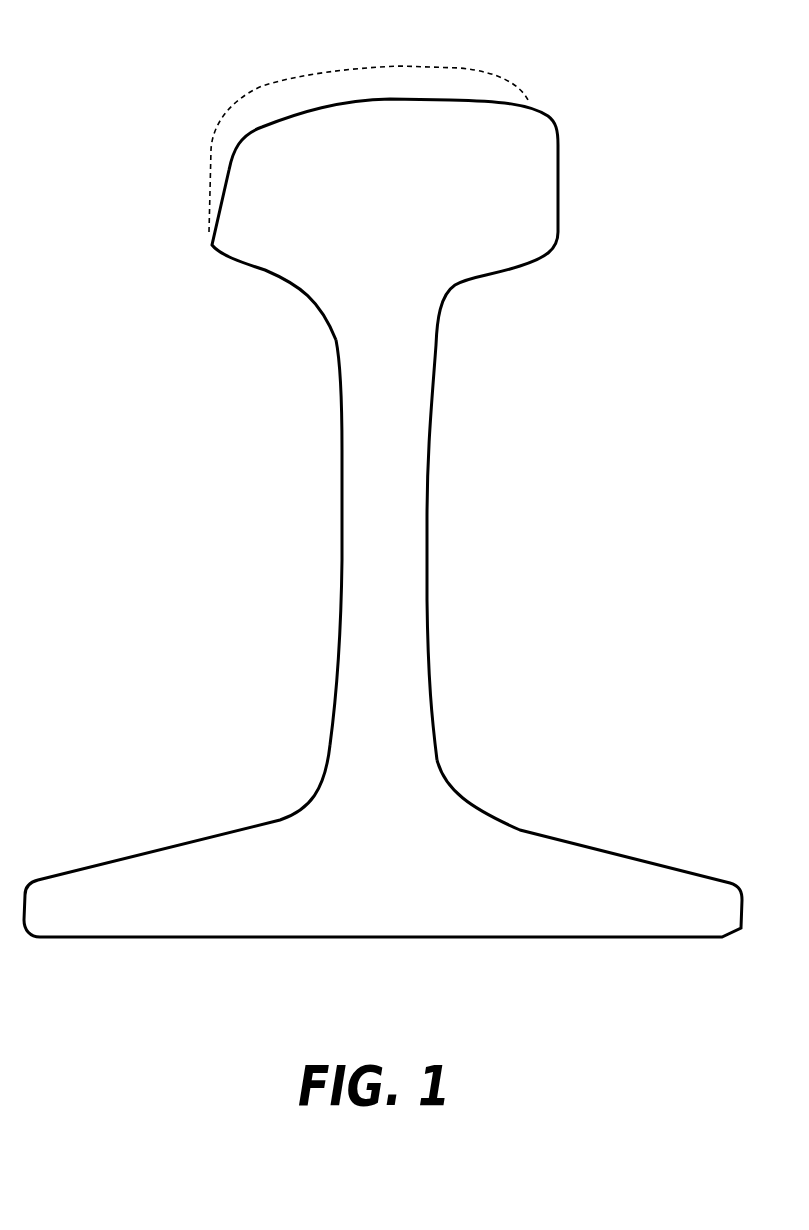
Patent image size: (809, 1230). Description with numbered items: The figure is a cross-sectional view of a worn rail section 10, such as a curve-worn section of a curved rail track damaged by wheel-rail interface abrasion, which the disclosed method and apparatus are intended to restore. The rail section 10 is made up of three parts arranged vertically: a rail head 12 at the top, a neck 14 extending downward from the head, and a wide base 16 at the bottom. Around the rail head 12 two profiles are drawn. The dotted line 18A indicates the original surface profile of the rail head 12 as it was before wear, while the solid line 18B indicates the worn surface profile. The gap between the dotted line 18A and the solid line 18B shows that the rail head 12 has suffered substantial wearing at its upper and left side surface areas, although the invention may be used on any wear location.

The rail section 10 is at (383, 518).
The rail head 12 is at (355, 222).
The neck 14 is at (411, 493).
The base 16 is at (560, 860).
The dotted line 18A is at (318, 72).
The solid line 18B is at (255, 130).